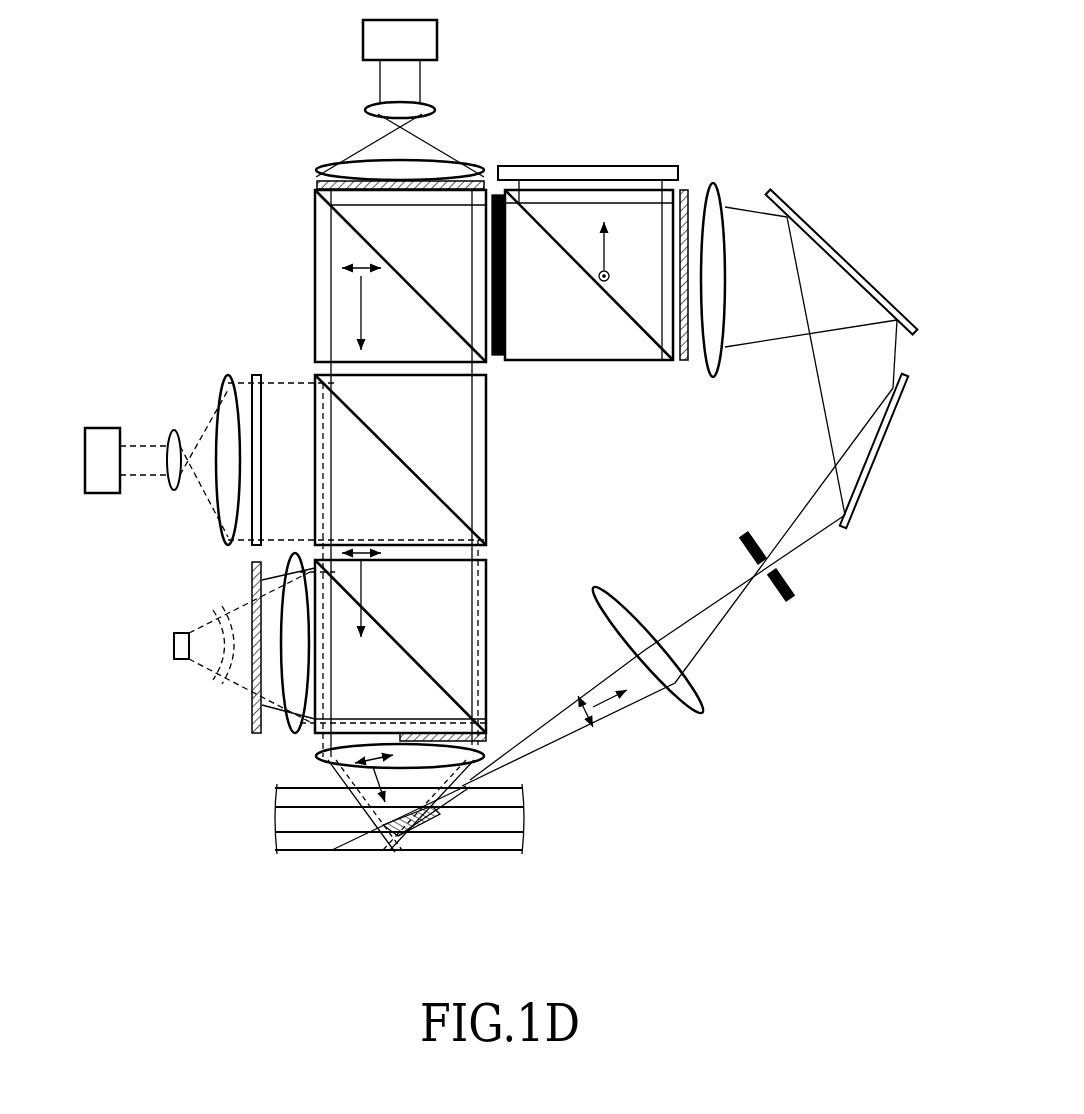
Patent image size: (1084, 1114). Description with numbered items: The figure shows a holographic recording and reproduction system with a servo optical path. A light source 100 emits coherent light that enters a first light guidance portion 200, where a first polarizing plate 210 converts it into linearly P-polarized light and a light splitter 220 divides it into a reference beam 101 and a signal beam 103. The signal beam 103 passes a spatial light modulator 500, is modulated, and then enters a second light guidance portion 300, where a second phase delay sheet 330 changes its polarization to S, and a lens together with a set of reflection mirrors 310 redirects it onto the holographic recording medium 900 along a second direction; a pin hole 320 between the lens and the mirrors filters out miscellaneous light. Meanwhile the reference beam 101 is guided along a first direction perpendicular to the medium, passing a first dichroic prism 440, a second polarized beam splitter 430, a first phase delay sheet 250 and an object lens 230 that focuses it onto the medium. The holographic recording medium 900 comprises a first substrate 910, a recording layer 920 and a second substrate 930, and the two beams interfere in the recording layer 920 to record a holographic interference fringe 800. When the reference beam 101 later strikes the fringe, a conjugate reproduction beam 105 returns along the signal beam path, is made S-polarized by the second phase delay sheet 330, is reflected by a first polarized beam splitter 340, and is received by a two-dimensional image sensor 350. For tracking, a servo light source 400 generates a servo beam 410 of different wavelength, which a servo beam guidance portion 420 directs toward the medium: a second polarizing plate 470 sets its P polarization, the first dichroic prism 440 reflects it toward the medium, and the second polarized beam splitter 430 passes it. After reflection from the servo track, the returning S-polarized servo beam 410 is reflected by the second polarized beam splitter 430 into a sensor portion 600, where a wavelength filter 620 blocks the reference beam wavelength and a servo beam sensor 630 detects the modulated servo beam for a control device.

The light source 100 is at (457, 72).
The first light guidance portion 200 is at (224, 216).
The first polarizing plate 210 is at (316, 184).
The light splitter 220 is at (323, 263).
The spatial light modulator 500 is at (497, 192).
The image sensor 350 is at (590, 170).
The first polarized beam splitter 340 is at (637, 353).
The signal beam 103 is at (696, 212).
The second phase delay sheet 330 is at (706, 362).
The reference beam 101 is at (455, 371).
The second light guidance portion 300 is at (753, 163).
The set of reflection mirrors 310 is at (842, 213).
The pin hole 320 is at (792, 598).
The reproduction beam 105 is at (712, 625).
The servo light source 400 is at (160, 390).
The second polarizing plate 470 is at (255, 373).
The servo beam 410 is at (292, 402).
The servo beam guidance portion 420 is at (525, 472).
The first dichroic prism 440 is at (486, 492).
The second polarized beam splitter 430 is at (486, 585).
The sensor portion 600 is at (140, 586).
The wavelength filter 620 is at (251, 578).
The servo beam sensor 630 is at (181, 660).
The first phase delay sheet 250 is at (488, 735).
The object lens 230 is at (322, 757).
The holographic recording medium 900 is at (558, 860).
The first substrate 910 is at (508, 798).
The recording layer 920 is at (510, 822).
The second substrate 930 is at (500, 851).
The holographic interference fringe 800 is at (413, 840).